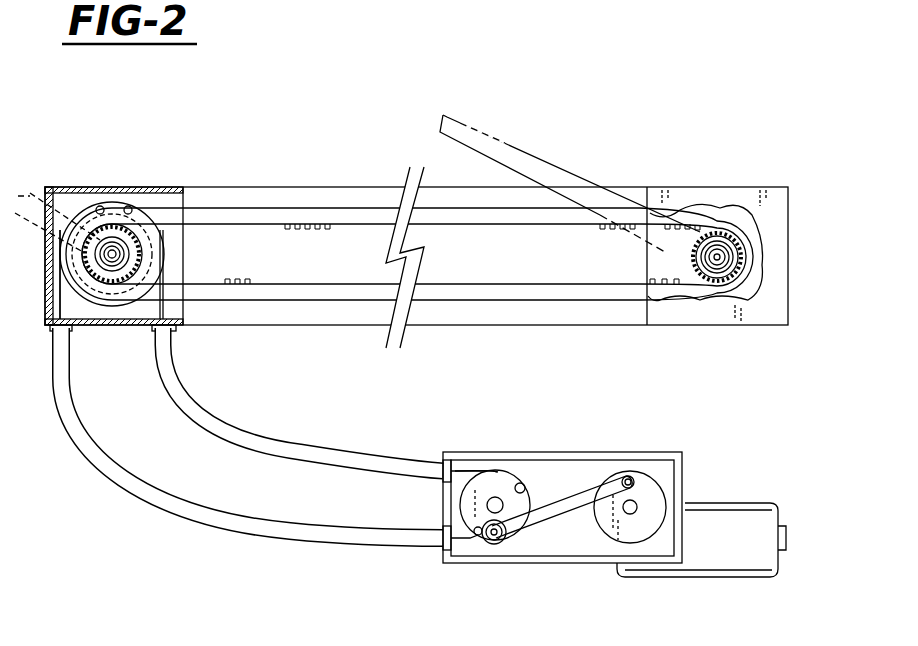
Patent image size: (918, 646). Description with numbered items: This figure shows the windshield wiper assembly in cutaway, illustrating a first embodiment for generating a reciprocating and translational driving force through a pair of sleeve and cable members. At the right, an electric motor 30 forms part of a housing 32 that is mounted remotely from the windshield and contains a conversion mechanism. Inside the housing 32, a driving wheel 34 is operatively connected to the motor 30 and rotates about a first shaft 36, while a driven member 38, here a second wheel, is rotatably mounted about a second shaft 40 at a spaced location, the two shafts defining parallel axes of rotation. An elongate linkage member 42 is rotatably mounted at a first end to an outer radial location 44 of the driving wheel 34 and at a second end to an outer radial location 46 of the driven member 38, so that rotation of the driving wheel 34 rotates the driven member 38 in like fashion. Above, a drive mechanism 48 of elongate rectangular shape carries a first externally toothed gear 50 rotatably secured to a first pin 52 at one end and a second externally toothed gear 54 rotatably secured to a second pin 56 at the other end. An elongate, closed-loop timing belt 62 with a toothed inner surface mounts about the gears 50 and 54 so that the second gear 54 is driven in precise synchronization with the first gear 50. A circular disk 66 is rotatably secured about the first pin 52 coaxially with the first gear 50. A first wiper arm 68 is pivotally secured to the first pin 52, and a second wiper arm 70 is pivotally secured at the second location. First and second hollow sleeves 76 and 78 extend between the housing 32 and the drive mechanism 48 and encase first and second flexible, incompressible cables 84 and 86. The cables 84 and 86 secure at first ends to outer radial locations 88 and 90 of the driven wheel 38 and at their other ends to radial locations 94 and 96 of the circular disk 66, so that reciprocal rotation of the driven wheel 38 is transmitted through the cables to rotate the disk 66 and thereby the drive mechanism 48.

The electric motor 30 is at (748, 503).
The housing 32 is at (567, 562).
The driving wheel 34 is at (648, 493).
The first shaft 36 is at (620, 507).
The driven member 38 is at (467, 512).
The second shaft 40 is at (495, 497).
The linkage member 42 is at (573, 502).
The outer radial location of the driving wheel 44 is at (635, 477).
The outer radial location of the driven member 46 is at (512, 540).
The drive mechanism 48 is at (374, 150).
The first externally toothed gear 50 is at (140, 243).
The first pin 52 is at (113, 258).
The second externally toothed gear 54 is at (732, 224).
The second pin 56 is at (720, 260).
The timing belt 62 is at (323, 226).
The circular disk 66 is at (83, 292).
The first wiper arm 68 is at (28, 190).
The second wiper arm 70 is at (550, 167).
The first sleeve 76 is at (330, 537).
The second sleeve 78 is at (328, 452).
The first cable 84 is at (477, 540).
The second cable 86 is at (460, 469).
The outer radial location of the driven wheel 88 is at (485, 540).
The outer radial location of the driven wheel 90 is at (520, 483).
The radial location of the circular disk 94 is at (100, 206).
The radial location of the circular disk 96 is at (130, 206).